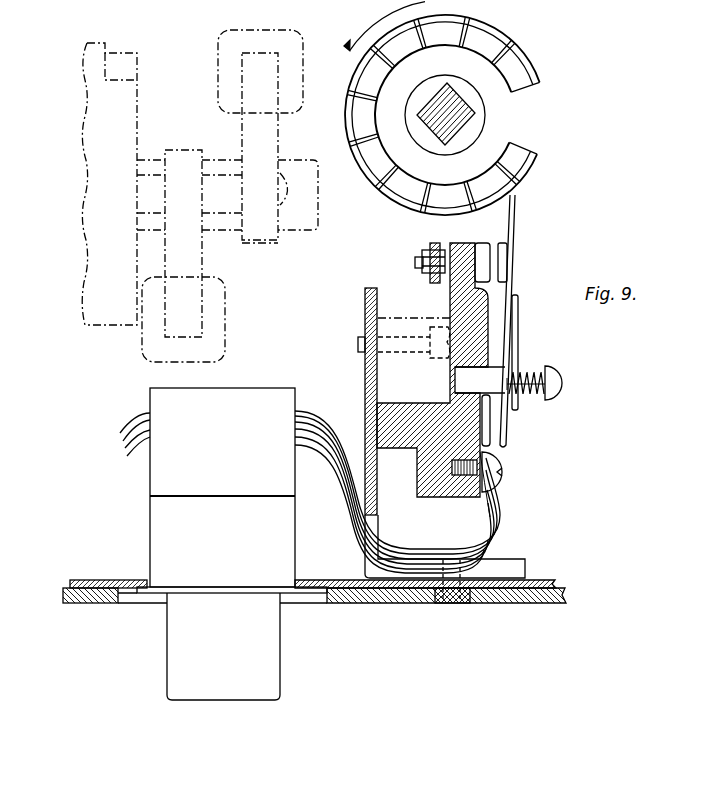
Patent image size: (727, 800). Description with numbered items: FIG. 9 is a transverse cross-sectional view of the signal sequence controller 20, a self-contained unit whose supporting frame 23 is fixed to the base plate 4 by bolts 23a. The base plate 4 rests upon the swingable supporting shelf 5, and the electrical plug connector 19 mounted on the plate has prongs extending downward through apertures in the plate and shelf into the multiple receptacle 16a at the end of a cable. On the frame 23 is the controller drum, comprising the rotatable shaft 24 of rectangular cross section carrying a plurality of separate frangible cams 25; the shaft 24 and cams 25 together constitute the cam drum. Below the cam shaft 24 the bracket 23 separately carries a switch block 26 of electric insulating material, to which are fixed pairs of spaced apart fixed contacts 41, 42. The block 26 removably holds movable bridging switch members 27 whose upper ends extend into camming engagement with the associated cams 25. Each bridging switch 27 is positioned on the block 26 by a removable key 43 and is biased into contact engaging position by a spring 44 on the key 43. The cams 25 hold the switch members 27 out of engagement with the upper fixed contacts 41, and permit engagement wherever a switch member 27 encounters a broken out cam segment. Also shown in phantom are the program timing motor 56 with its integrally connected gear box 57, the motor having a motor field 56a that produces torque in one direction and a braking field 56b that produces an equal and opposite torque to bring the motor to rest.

The base plate 4 is at (313, 586).
The supporting shelf 5 is at (380, 606).
The multiple receptacle 16a is at (175, 657).
The electrical plug connector 19 is at (153, 532).
The signal sequence controller 20 is at (386, 270).
The supporting frame 23 is at (366, 377).
The bolts 23a is at (465, 603).
The rotatable shaft 24 is at (463, 123).
The cams 25 is at (533, 53).
The switch block 26 is at (450, 300).
The signal switches 27 is at (513, 241).
The fixed contacts 41 is at (480, 262).
The fixed contacts 42 is at (495, 447).
The removable key 43 is at (555, 374).
The spring 44 is at (532, 372).
The program timing motor 56 is at (305, 235).
The motor field 56a is at (202, 266).
The braking field 56b is at (242, 130).
The gear box 57 is at (125, 330).